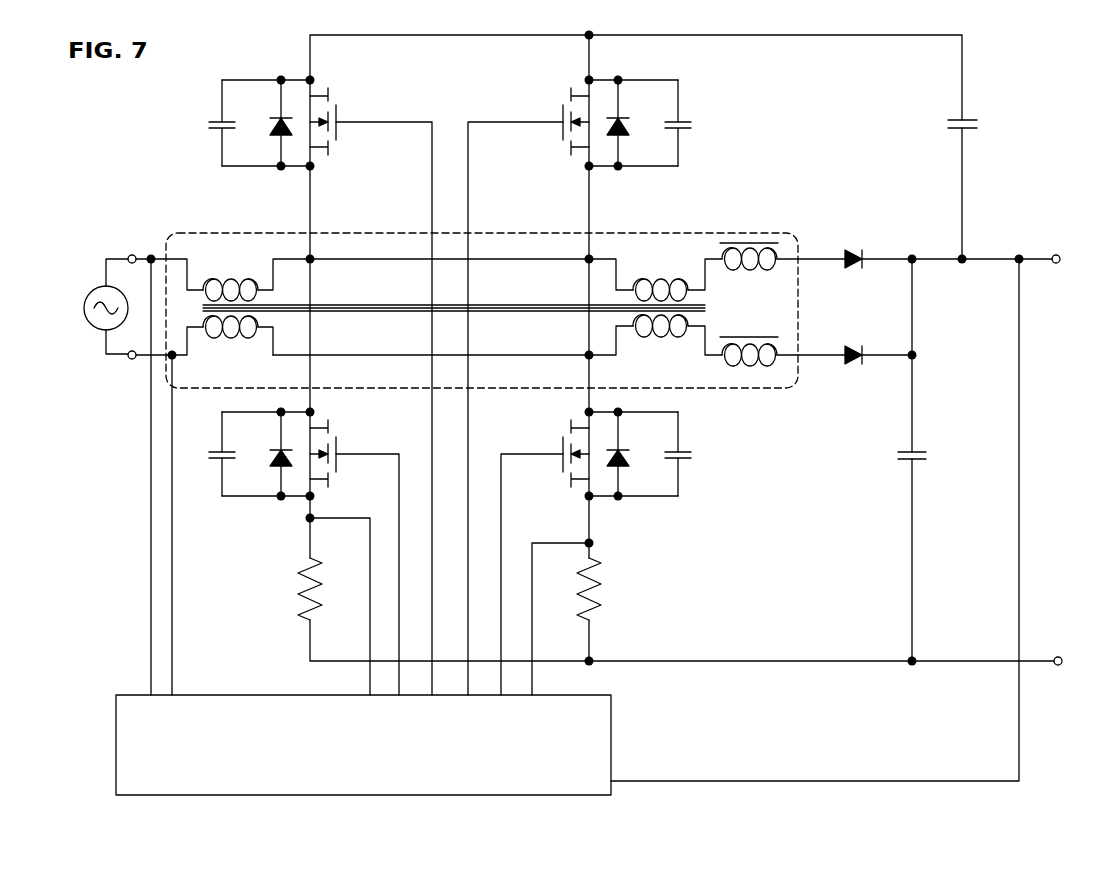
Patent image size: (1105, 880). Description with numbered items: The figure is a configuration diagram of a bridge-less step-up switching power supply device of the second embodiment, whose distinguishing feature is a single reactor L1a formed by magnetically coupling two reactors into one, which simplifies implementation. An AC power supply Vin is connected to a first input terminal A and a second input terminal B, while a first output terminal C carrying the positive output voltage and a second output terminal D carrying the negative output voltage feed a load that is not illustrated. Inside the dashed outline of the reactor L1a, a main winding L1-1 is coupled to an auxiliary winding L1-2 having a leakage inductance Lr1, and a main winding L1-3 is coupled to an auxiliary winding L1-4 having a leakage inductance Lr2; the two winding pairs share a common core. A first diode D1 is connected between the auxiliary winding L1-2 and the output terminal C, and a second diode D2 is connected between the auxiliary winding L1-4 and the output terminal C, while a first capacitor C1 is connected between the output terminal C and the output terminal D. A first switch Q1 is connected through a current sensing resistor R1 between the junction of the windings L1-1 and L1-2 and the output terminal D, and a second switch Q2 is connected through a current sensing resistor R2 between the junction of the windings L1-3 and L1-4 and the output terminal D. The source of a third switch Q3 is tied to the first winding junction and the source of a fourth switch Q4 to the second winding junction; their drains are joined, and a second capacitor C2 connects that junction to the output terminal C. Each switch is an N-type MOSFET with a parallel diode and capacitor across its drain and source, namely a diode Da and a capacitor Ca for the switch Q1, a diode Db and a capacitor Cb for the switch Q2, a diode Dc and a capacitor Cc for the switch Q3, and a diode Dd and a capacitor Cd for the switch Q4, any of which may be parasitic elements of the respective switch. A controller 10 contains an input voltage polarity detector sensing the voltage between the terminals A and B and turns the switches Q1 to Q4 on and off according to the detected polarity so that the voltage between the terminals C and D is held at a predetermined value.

The AC power supply Vin is at (89, 306).
The input terminal A is at (137, 246).
The input terminal B is at (148, 367).
The output terminal C is at (1076, 247).
The output terminal D is at (1074, 650).
The switch Q1 is at (354, 551).
The switch Q2 is at (545, 557).
The switch Q3 is at (371, 387).
The switch Q4 is at (528, 387).
The capacitor Ca is at (211, 454).
The capacitor Cb is at (689, 454).
The capacitor Cc is at (211, 123).
The capacitor Cd is at (689, 123).
The diode Da is at (269, 454).
The diode Db is at (631, 454).
The diode Dc is at (269, 123).
The diode Dd is at (632, 123).
The reactor L1a is at (247, 233).
The main winding L1-1 is at (230, 277).
The auxiliary winding L1-2 is at (655, 276).
The main winding L1-3 is at (222, 339).
The auxiliary winding L1-4 is at (655, 340).
The leakage inductance Lr1 is at (782, 271).
The leakage inductance Lr2 is at (782, 339).
The diode D1 is at (946, 244).
The diode D2 is at (876, 340).
The capacitor C1 is at (898, 454).
The capacitor C2 is at (972, 110).
The current sensing resistor R1 is at (294, 589).
The current sensing resistor R2 is at (604, 589).
The controller 10 is at (611, 746).